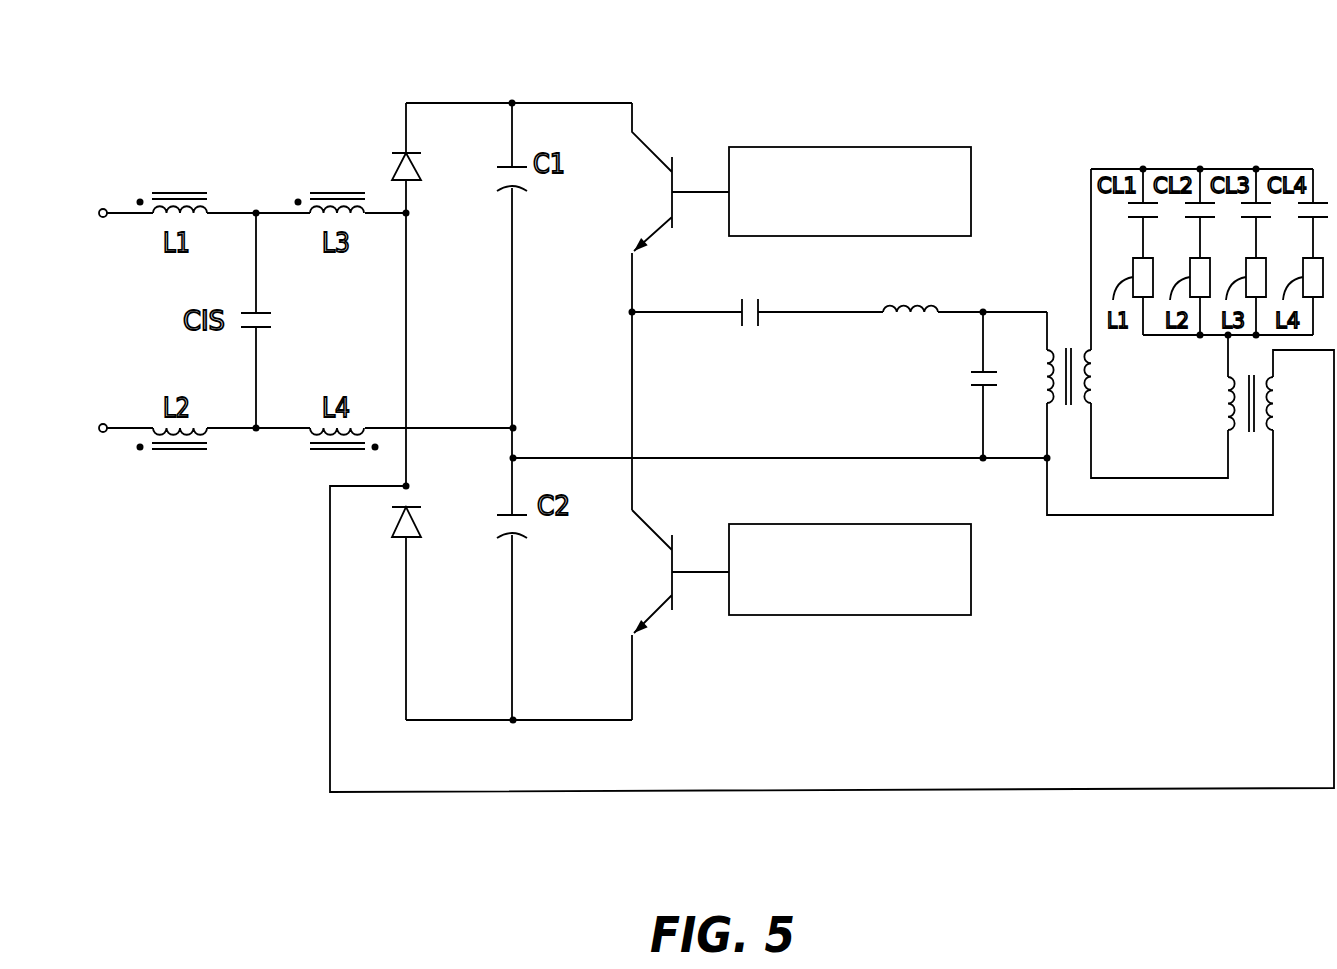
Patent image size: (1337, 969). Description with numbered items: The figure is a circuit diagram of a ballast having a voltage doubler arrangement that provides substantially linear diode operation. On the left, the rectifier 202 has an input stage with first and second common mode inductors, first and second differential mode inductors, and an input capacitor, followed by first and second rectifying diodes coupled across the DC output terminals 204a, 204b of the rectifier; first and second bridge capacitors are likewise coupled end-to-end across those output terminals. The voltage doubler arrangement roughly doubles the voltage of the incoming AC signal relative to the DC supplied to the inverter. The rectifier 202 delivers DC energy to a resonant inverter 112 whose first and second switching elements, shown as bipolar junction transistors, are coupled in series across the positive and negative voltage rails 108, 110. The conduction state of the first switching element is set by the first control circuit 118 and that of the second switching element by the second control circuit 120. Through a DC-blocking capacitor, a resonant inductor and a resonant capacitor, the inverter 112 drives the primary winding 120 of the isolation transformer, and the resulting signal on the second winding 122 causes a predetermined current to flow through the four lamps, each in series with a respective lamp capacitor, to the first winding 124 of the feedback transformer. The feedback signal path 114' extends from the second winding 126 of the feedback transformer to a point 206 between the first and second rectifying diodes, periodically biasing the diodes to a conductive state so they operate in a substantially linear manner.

The DC output terminal 204a is at (428, 103).
The positive voltage rail 108 is at (587, 103).
The first control circuit 118 is at (862, 147).
The second control circuit / primary winding of isolation transformer 120 is at (862, 615).
The second winding of isolation transformer 122 is at (1090, 348).
The rectifier 202 is at (410, 411).
The point between rectifying diodes 206 is at (406, 486).
The resonant inverter 112 is at (839, 360).
The first winding of feedback transformer 124 is at (1228, 378).
The second winding of feedback transformer 126 is at (1273, 380).
The DC output terminal 204b is at (467, 720).
The negative voltage rail 110 is at (573, 720).
The feedback signal path 114' is at (832, 602).